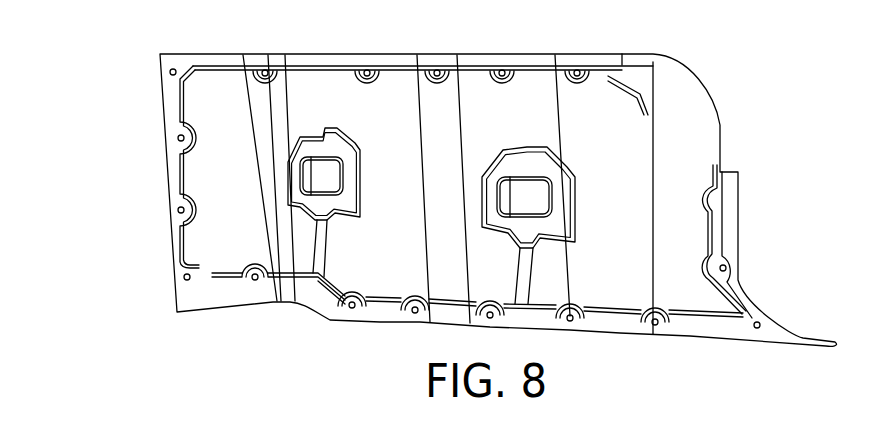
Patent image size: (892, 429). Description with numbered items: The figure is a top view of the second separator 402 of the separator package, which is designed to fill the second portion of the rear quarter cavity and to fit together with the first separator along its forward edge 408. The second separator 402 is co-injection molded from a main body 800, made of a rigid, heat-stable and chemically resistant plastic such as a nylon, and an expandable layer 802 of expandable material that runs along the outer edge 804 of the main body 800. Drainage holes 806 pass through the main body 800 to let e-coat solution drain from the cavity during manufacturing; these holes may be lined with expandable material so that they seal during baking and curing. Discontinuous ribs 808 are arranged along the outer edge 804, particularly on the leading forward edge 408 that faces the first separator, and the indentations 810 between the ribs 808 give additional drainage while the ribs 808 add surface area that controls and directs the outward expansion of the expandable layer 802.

The second separator 402 is at (104, 150).
The forward edge 408 is at (158, 259).
The main body 800 is at (638, 178).
The expandable layer 802 is at (733, 224).
The outer edge 804 is at (477, 72).
The drainage holes 806 is at (323, 168).
The discontinuous ribs 808 is at (180, 100).
The indentations 810 is at (180, 131).